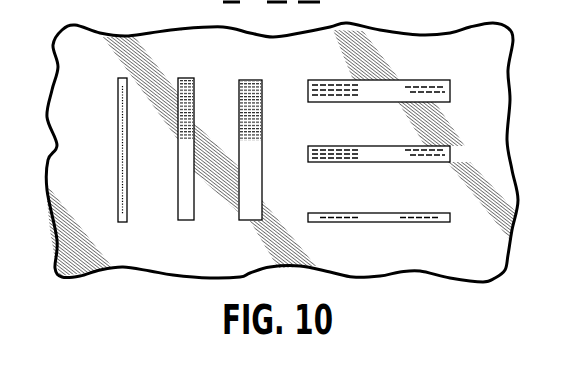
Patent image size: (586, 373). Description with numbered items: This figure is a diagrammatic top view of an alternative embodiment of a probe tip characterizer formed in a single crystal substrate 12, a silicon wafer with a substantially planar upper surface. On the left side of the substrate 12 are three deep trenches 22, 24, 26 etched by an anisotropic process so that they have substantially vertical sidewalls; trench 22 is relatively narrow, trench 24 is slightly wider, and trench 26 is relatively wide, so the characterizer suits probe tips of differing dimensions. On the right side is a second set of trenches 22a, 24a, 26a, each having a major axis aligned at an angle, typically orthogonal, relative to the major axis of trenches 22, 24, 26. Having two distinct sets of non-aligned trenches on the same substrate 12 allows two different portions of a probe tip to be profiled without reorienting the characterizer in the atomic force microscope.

The single crystal substrate 12 is at (178, 43).
The trench 22 is at (120, 172).
The trench 24 is at (187, 209).
The trench 26 is at (252, 100).
The trench 22a is at (358, 213).
The trench 24a is at (375, 146).
The trench 26a is at (325, 80).